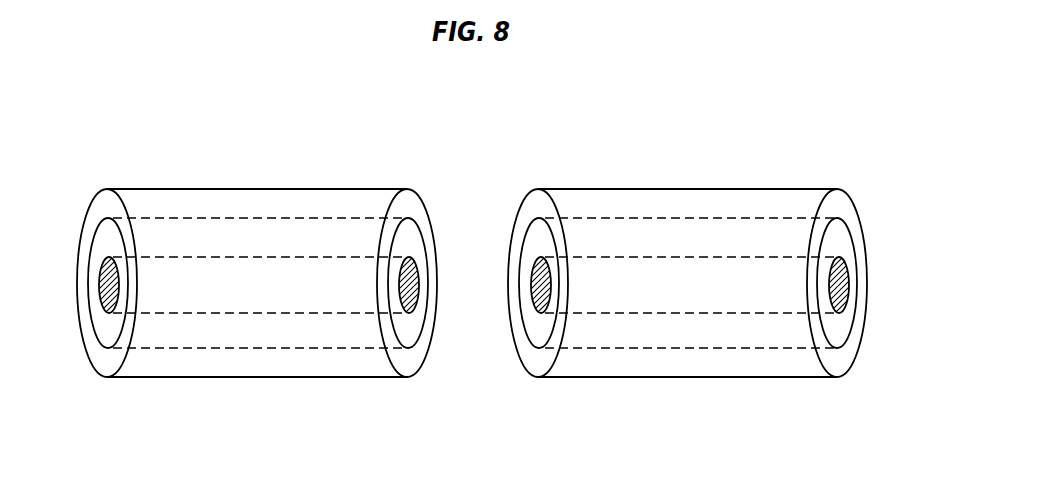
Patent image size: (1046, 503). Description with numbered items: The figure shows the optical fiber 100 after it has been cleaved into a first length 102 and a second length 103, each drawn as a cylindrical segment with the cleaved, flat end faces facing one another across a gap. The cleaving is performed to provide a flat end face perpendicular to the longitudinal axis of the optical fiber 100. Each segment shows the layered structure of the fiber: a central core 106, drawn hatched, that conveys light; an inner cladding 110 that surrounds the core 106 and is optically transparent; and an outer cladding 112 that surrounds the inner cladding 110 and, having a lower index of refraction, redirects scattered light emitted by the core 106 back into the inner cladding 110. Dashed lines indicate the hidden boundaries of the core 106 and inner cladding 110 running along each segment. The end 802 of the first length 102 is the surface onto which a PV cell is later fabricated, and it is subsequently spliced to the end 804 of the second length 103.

The optical fiber 100 is at (694, 84).
The first length 102 is at (415, 175).
The second length 103 is at (850, 175).
The core 106 is at (406, 302).
The inner cladding 110 is at (416, 246).
The outer cladding 112 is at (412, 207).
The end 802 is at (435, 372).
The end 804 is at (516, 188).